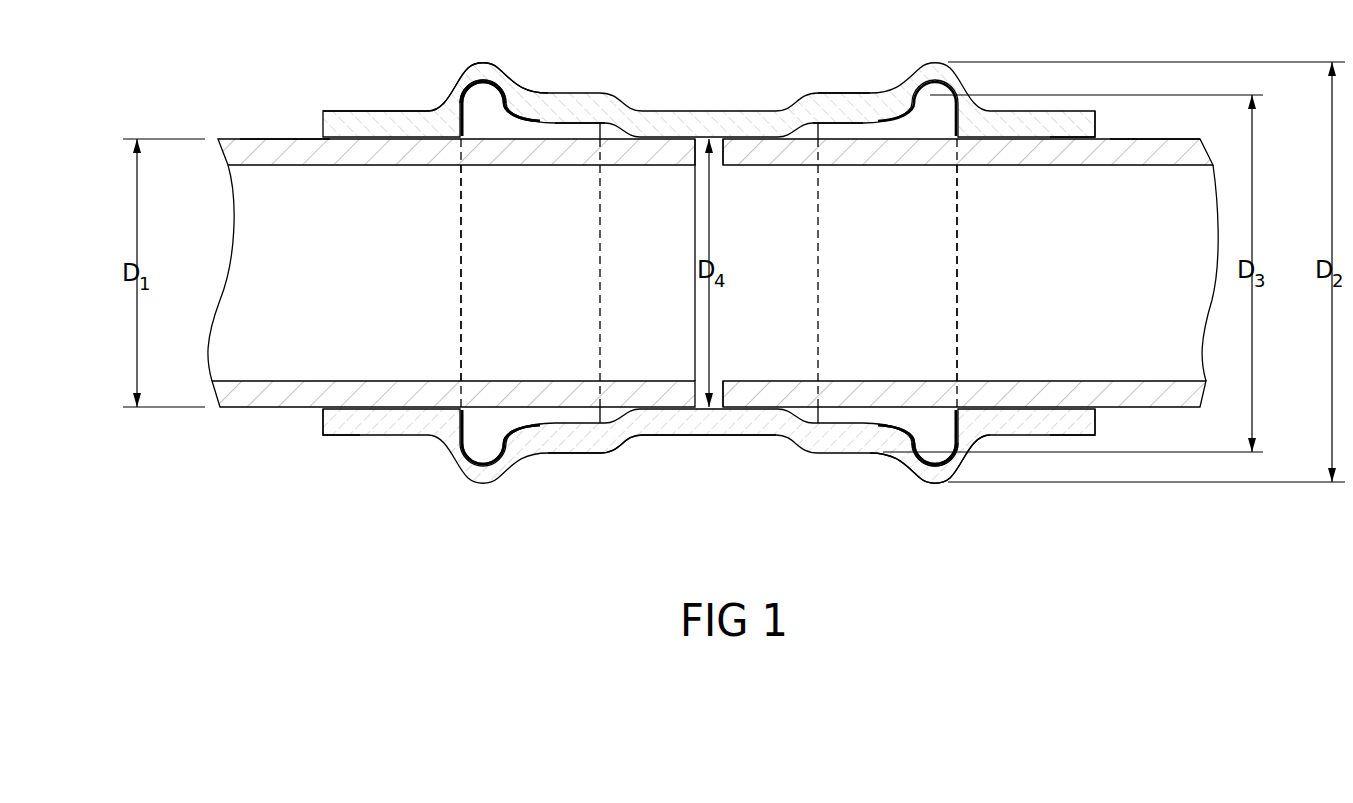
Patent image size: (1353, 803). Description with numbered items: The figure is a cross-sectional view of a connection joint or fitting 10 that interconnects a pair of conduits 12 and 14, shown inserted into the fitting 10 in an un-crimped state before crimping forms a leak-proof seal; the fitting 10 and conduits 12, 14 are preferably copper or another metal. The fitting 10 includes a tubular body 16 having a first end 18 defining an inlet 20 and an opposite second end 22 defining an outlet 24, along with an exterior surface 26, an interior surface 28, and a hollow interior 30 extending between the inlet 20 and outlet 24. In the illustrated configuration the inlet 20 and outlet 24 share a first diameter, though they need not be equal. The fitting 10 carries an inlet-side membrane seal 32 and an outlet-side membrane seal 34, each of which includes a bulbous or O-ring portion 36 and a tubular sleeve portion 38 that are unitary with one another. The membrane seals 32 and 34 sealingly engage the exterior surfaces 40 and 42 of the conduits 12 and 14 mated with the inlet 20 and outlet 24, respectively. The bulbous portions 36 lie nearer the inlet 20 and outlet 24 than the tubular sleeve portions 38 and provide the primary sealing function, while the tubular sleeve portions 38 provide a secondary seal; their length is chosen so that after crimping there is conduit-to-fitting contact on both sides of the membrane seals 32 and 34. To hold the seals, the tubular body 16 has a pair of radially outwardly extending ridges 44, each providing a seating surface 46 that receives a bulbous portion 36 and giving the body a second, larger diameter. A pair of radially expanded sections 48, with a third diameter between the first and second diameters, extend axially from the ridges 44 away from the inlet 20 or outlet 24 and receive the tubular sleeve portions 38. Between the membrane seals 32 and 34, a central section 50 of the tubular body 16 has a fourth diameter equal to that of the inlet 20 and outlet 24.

The fitting 10 is at (917, 533).
The conduit 12 is at (1175, 408).
The conduit 14 is at (268, 395).
The tubular body 16 is at (723, 435).
The first end 18 is at (321, 420).
The inlet 20 is at (392, 428).
The second end 22 is at (1092, 420).
The outlet 24 is at (1080, 125).
The exterior surface 26 is at (596, 454).
The interior surface 28 is at (722, 142).
The hollow interior 30 is at (660, 288).
The inlet-side membrane seal 32 is at (461, 273).
The outlet-side membrane seal 34 is at (957, 274).
The bulbous portion 36 is at (489, 445).
The tubular sleeve portion 38 is at (578, 126).
The exterior surface 40 is at (283, 139).
The exterior surface 42 is at (1170, 139).
The radially outwardly extending ridge 44 is at (486, 61).
The seating surface 46 is at (508, 92).
The radially expanded section 48 is at (838, 94).
The central section 50 is at (702, 428).